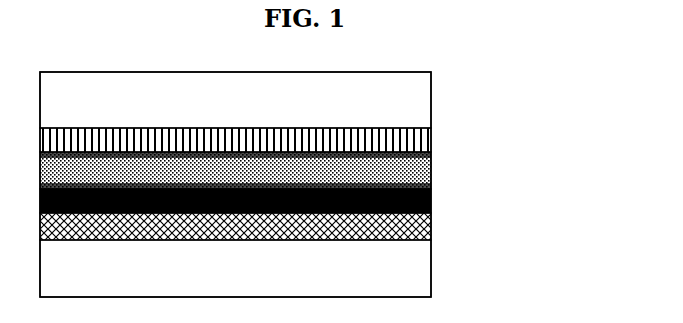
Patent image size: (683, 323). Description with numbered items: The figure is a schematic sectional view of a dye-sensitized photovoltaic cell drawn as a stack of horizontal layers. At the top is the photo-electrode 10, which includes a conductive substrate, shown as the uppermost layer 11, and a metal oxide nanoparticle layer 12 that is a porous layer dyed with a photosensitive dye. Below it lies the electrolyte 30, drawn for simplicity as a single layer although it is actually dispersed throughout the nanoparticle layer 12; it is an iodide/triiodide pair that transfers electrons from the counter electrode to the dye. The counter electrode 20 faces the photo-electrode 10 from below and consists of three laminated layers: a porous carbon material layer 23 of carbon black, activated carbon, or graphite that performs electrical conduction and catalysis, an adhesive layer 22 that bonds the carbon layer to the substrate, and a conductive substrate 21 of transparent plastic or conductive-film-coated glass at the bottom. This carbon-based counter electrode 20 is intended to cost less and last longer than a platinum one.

The photo-electrode 10 is at (292, 112).
The top substrate layer 11 is at (418, 96).
The metal oxide nanoparticle layer 12 is at (420, 142).
The electrolyte 30 is at (420, 172).
The counter electrode 20 is at (295, 243).
The porous carbon material layer 23 is at (428, 202).
The adhesive layer 22 is at (428, 223).
The conductive substrate 21 is at (420, 270).